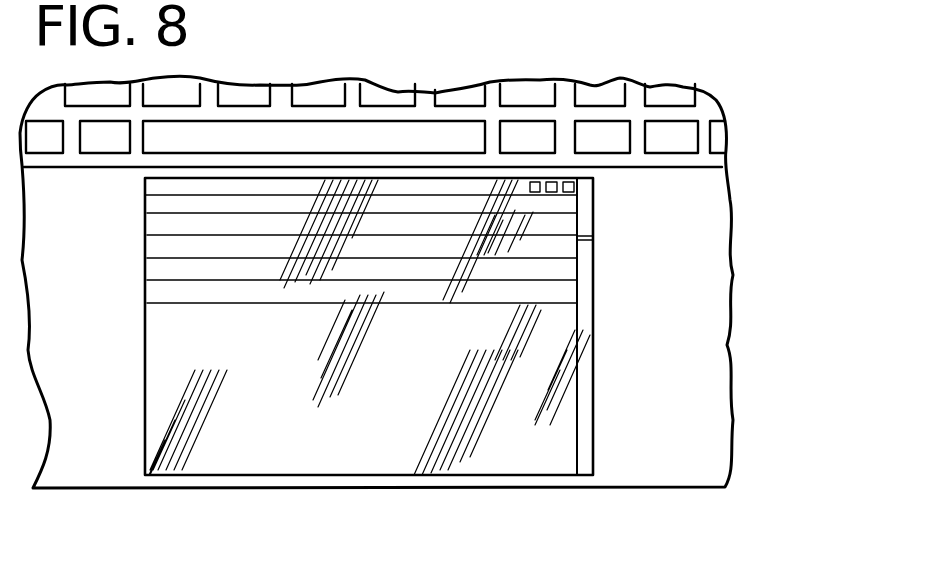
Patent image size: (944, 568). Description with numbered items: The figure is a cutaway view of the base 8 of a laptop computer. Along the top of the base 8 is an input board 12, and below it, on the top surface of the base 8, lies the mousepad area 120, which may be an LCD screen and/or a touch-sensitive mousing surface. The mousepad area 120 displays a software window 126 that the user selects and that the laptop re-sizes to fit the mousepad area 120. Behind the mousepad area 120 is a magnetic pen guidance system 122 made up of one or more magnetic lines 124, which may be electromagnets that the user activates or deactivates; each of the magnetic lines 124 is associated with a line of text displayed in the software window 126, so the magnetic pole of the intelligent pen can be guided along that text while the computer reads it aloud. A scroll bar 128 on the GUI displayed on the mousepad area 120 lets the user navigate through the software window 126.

The base 8 is at (690, 382).
The input board 12 is at (632, 112).
The mousepad area 120 is at (202, 476).
The magnetic pen guidance system 122 is at (558, 300).
The magnetic lines 124 is at (177, 258).
The software window 126 is at (147, 193).
The scroll bar 128 is at (582, 240).